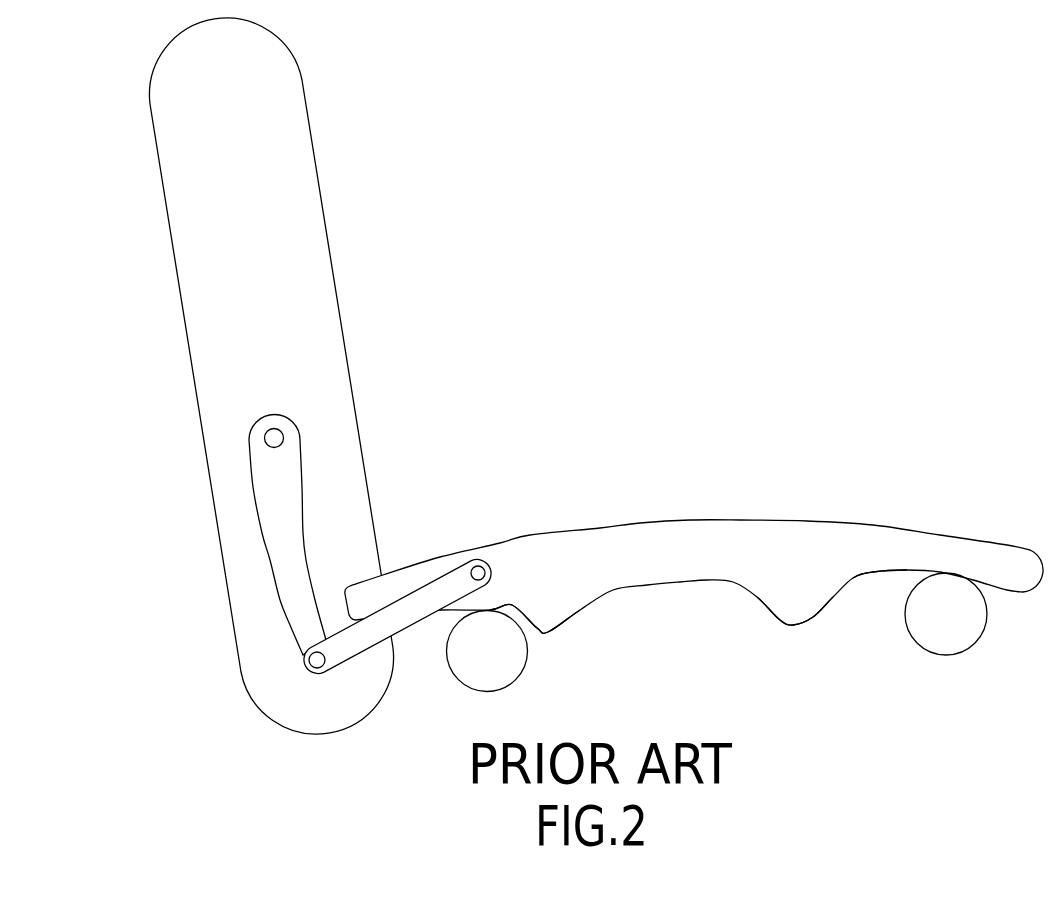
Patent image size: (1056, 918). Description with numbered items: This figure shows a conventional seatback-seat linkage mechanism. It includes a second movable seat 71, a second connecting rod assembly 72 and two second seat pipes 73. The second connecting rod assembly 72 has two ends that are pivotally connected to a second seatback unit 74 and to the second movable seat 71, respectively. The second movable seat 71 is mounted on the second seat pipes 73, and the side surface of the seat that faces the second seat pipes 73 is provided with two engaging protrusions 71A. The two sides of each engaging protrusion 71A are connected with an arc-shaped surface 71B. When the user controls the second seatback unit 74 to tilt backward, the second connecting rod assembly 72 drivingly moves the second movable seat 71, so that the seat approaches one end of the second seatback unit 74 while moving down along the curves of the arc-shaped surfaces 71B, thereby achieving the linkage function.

The second movable seat 71 is at (652, 535).
The engaging protrusion 71A is at (553, 603).
The arc-shaped surface 71B is at (490, 610).
The second connecting rod assembly 72 is at (437, 593).
The second seat pipe 73 is at (480, 675).
The second seatback unit 74 is at (298, 228).